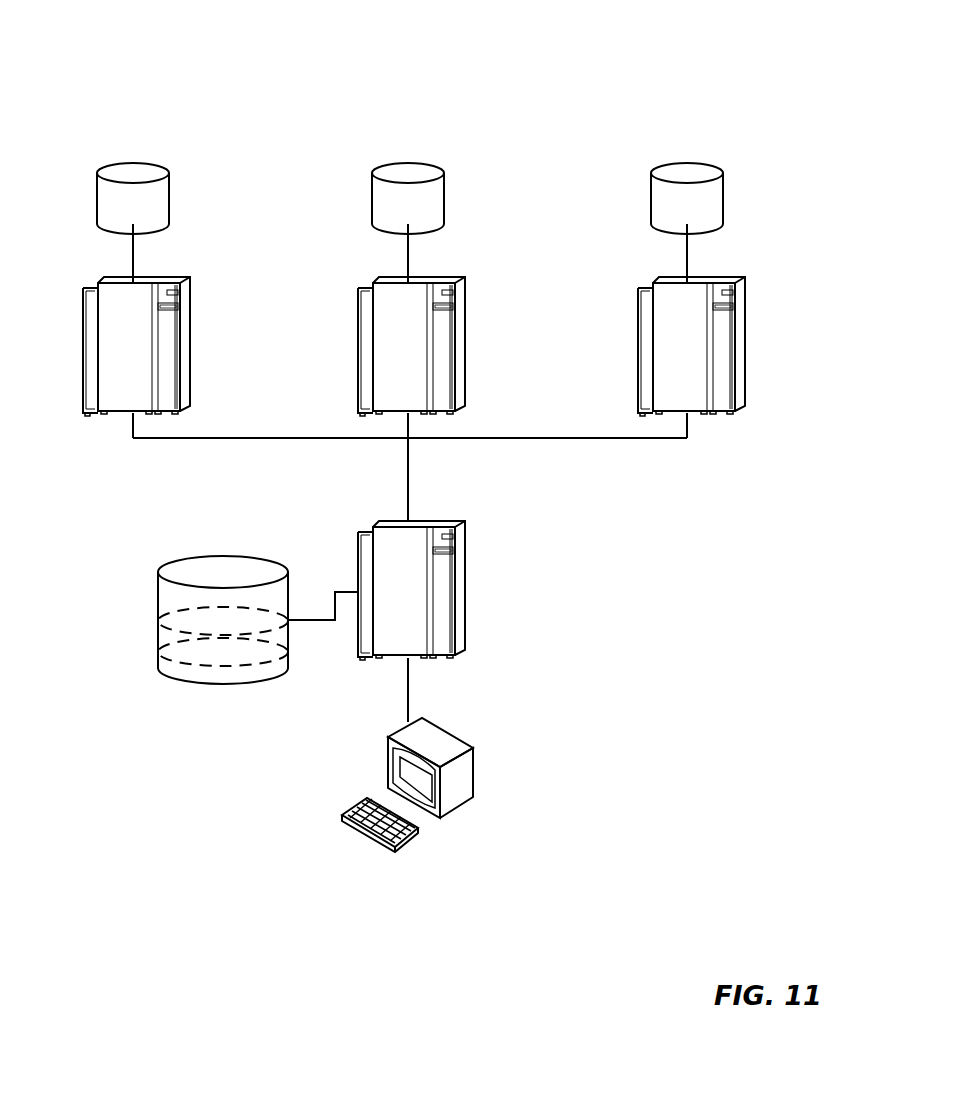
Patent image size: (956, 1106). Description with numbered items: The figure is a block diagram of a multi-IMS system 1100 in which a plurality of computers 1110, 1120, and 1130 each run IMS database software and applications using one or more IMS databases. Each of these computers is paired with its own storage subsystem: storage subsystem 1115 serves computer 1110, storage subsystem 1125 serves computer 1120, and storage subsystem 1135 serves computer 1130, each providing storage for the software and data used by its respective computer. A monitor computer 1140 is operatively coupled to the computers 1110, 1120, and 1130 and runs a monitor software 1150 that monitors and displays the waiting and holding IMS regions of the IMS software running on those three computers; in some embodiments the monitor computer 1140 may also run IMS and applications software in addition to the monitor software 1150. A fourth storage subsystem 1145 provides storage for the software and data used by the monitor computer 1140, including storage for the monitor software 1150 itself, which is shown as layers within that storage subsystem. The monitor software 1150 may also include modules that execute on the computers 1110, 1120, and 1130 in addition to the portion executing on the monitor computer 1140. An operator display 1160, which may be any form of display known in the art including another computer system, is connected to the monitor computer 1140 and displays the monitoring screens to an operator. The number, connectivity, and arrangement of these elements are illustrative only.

The system 1100 is at (410, 98).
The computer 1110 is at (185, 348).
The storage subsystem 1115 is at (170, 198).
The computer 1120 is at (460, 348).
The storage subsystem 1125 is at (445, 198).
The computer 1130 is at (740, 348).
The storage subsystem 1135 is at (725, 198).
The monitor computer 1140 is at (460, 590).
The storage subsystem 1145 is at (158, 577).
The monitor software 1150 is at (158, 640).
The operator display 1160 is at (473, 768).